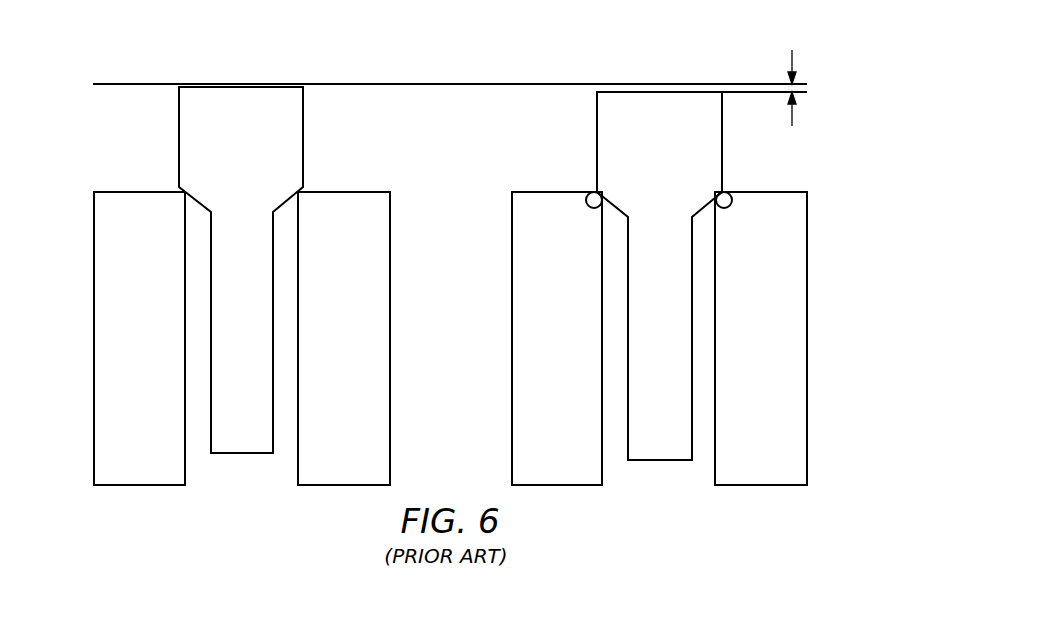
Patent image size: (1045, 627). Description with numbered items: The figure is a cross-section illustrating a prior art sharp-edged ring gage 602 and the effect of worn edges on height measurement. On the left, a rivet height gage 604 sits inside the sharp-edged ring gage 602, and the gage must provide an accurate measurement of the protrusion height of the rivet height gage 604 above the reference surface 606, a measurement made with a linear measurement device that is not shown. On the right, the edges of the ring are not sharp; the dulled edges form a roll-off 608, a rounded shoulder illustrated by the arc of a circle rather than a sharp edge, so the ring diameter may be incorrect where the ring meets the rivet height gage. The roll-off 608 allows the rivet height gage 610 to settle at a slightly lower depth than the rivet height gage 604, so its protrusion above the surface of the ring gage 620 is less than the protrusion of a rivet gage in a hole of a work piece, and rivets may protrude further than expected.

The sharp-edged ring gage 602 is at (94, 316).
The rivet height gage 604 is at (179, 135).
The reference surface 606 is at (343, 190).
The roll-off 608 is at (586, 204).
The rivet height gage 610 is at (681, 206).
The ring gage 620 is at (807, 395).